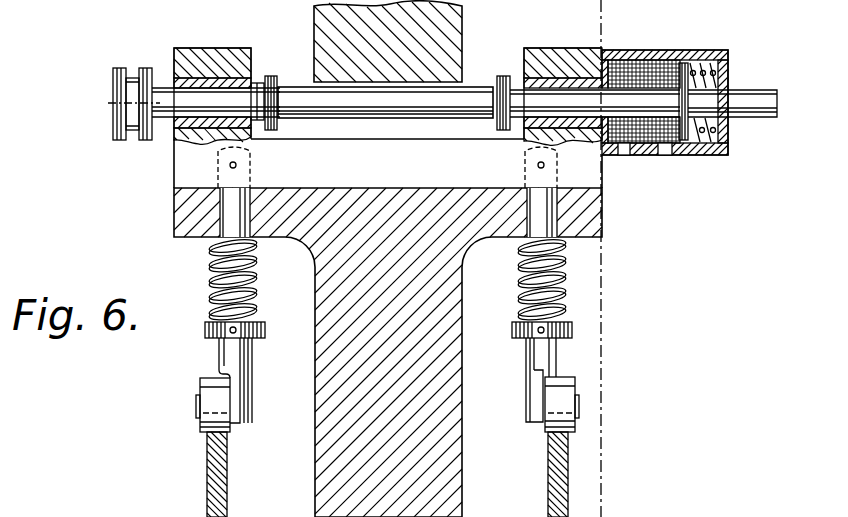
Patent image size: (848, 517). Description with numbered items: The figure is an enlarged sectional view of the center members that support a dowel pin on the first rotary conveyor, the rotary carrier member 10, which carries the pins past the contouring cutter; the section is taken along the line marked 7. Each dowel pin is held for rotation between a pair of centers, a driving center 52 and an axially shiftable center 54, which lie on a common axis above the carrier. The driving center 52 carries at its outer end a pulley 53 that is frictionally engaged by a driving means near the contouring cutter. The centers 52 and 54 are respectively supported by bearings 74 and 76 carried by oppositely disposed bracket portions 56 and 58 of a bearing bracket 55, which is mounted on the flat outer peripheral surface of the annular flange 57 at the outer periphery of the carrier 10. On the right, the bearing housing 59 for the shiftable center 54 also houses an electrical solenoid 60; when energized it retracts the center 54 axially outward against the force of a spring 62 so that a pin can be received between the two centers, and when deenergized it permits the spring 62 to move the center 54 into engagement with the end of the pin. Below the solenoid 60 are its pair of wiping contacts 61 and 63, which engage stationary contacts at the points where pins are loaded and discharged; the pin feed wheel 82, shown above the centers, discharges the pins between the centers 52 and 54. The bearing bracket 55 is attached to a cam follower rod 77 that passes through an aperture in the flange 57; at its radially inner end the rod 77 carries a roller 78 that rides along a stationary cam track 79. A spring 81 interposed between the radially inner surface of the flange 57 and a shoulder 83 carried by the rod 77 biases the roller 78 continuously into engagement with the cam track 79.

The section line 7- 7 is at (591, 15).
The rotary carrier member 10 is at (448, 483).
The driving center 52 is at (160, 97).
The pulley 53 is at (105, 93).
The axially shiftable center 54 is at (538, 97).
The bearing bracket 55 is at (237, 76).
The bracket portion 56 is at (207, 48).
The annular flange 57 is at (192, 230).
The bracket portion 58 is at (580, 43).
The bearing housing 59 is at (707, 51).
The electrical solenoid 60 is at (653, 62).
The wiping contact 61 is at (623, 158).
The spring 62 is at (713, 70).
The wiping contact 63 is at (670, 157).
The bearing 74 is at (245, 82).
The bearing 76 is at (528, 124).
The cam follower rod 77 is at (246, 370).
The roller 78 is at (211, 380).
The cam track 79 is at (200, 475).
The spring 81 is at (208, 290).
The pin feed wheel 82 is at (445, 21).
The shoulder 83 is at (205, 330).